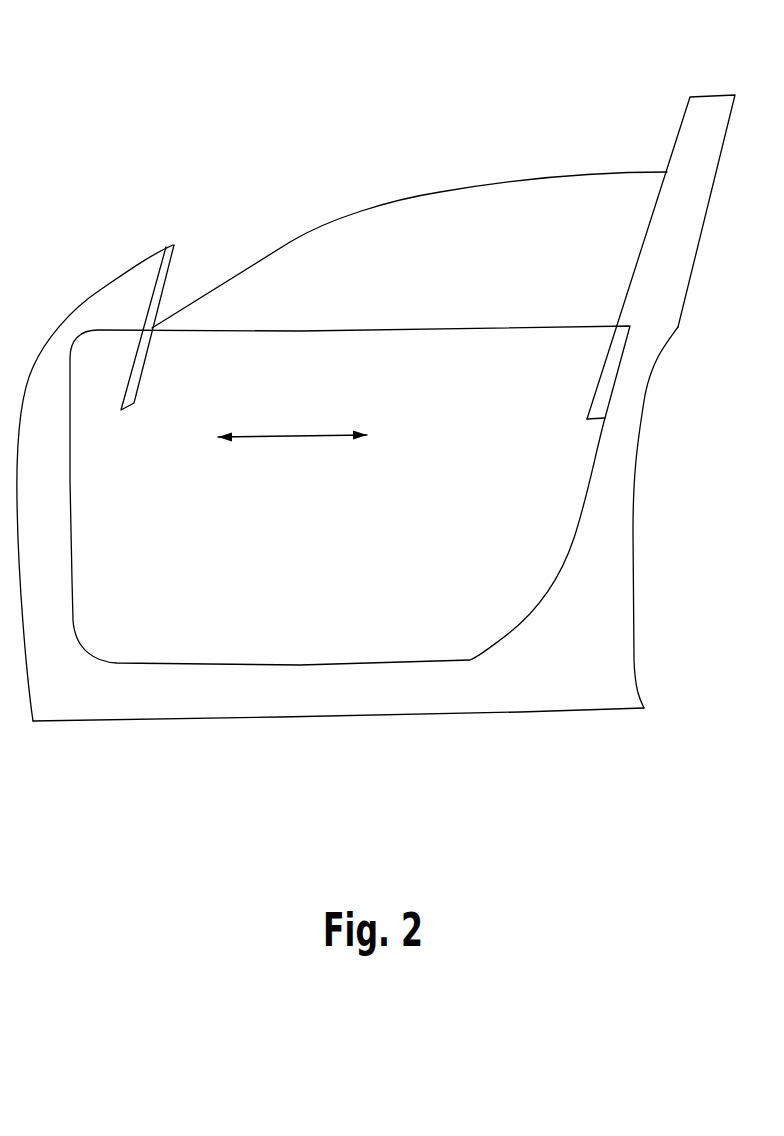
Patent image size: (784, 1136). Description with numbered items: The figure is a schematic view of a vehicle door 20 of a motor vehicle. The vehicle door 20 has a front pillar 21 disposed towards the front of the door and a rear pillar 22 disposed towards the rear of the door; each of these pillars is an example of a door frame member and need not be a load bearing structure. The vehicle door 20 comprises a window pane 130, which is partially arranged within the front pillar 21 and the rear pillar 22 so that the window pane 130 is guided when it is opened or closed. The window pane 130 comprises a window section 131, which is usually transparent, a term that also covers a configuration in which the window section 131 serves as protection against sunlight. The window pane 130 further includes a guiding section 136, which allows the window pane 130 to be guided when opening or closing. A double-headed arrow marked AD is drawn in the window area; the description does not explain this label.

The vehicle door 20 is at (96, 165).
The front pillar 21 is at (144, 332).
The rear pillar 22 is at (699, 134).
The window pane 130 is at (330, 219).
The window section 131 is at (443, 235).
The guiding section 136 is at (637, 252).
The adjustment direction AD is at (288, 440).